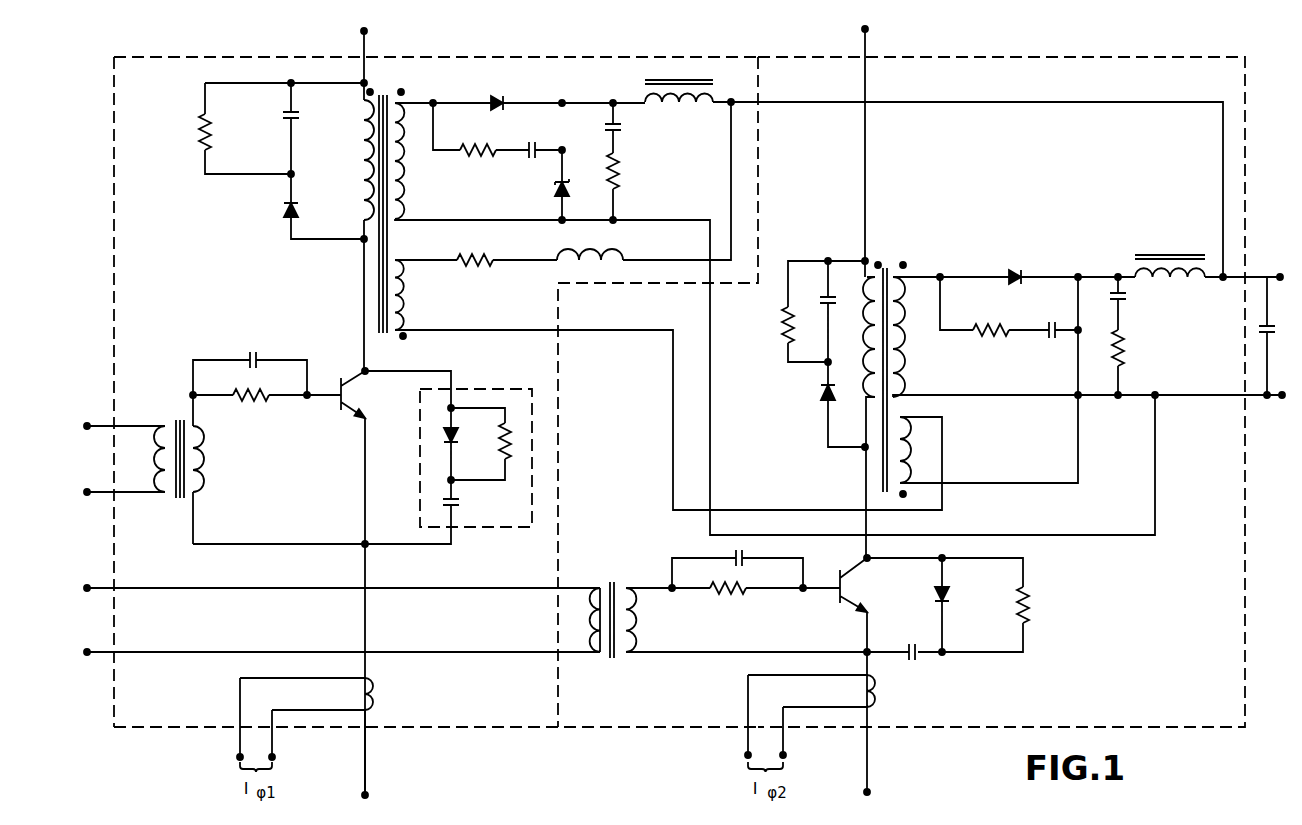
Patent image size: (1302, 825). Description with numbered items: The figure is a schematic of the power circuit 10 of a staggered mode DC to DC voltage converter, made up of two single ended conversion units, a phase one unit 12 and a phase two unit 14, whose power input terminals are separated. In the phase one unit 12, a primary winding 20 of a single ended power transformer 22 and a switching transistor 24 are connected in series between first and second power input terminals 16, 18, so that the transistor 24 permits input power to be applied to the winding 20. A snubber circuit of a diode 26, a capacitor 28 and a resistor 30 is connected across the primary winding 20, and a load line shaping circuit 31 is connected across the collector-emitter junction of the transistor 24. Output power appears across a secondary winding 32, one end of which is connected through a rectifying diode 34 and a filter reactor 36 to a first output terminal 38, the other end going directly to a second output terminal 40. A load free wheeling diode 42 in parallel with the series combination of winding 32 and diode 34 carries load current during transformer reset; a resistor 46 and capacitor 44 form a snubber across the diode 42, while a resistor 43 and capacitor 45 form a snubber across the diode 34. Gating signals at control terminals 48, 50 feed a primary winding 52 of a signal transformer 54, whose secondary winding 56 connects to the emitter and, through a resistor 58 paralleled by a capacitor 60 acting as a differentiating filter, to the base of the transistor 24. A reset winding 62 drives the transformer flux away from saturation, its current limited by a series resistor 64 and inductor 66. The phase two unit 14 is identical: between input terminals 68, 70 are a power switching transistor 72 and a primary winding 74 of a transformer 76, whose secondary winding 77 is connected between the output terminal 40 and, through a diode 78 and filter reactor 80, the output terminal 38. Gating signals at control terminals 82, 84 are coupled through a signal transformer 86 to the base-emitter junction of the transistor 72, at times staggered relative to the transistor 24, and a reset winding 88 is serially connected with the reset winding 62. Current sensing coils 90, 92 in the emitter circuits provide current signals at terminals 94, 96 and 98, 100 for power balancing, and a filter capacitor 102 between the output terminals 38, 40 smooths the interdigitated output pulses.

The power circuit 10 is at (648, 42).
The phase one conversion unit 12 is at (548, 58).
The phase two conversion unit 14 is at (1073, 52).
The first power input terminal 16 is at (368, 32).
The second power input terminal 18 is at (375, 790).
The primary winding 20 is at (358, 150).
The single ended power transformer 22 is at (633, 285).
The transistor 24 is at (366, 396).
The diode 26 is at (280, 206).
The capacitor 28 is at (278, 120).
The resistor 30 is at (193, 123).
The load line shaping circuit 31 is at (519, 384).
The secondary winding 32 is at (405, 180).
The rectifying diode 34 is at (499, 97).
The filter reactor 36 is at (655, 70).
The first output terminal 38 is at (1280, 270).
The second output terminal 40 is at (1280, 400).
The load free wheeling diode 42 is at (556, 186).
The resistor 43 is at (481, 140).
The capacitor 44 is at (640, 130).
The capacitor 45 is at (532, 144).
The resistor 46 is at (622, 170).
The control terminal 48 is at (88, 418).
The control terminal 50 is at (88, 485).
The primary winding 52 is at (156, 472).
The signal transformer 54 is at (189, 462).
The secondary winding 56 is at (200, 465).
The resistor 58 is at (257, 405).
The capacitor 60 is at (274, 346).
The reset winding 62 is at (410, 300).
The resistor 64 is at (495, 248).
The inductor 66 is at (617, 250).
The power input terminal 68 is at (872, 33).
The power input terminal 70 is at (880, 792).
The power switching transistor 72 is at (870, 590).
The primary winding 74 is at (858, 348).
The transformer 76 is at (888, 258).
The secondary winding 77 is at (905, 358).
The diode 78 is at (1024, 268).
The filter reactor 80 is at (1179, 250).
The control terminal 82 is at (88, 584).
The control terminal 84 is at (88, 658).
The signal transformer 86 is at (615, 572).
The reset winding 88 is at (905, 462).
The current sensing coil 90 is at (374, 690).
The current sensing coil 92 is at (878, 697).
The terminal 94 is at (231, 752).
The terminal 96 is at (277, 756).
The terminal 98 is at (741, 750).
The terminal 100 is at (790, 756).
The filter capacitor 102 is at (1254, 324).